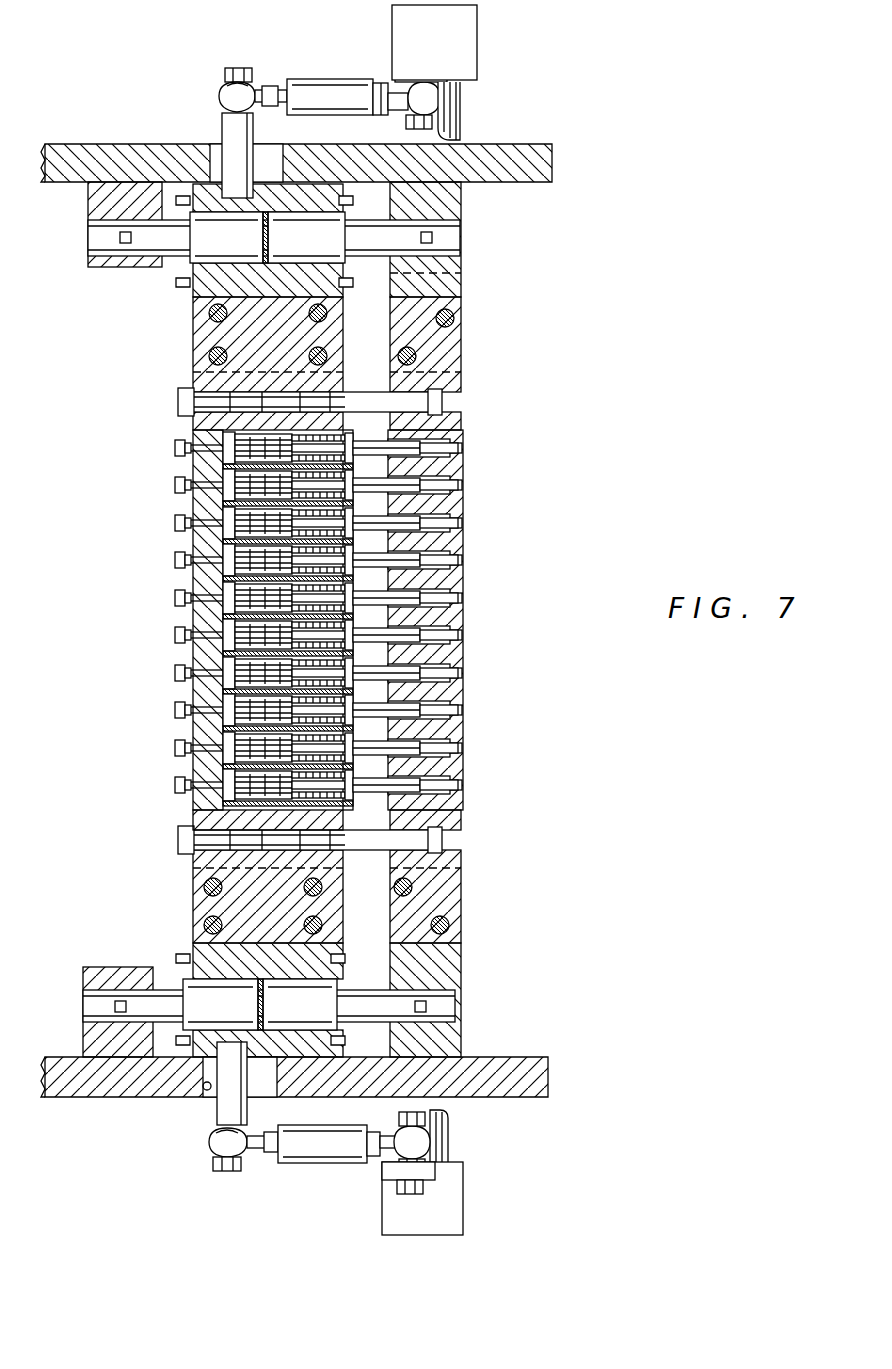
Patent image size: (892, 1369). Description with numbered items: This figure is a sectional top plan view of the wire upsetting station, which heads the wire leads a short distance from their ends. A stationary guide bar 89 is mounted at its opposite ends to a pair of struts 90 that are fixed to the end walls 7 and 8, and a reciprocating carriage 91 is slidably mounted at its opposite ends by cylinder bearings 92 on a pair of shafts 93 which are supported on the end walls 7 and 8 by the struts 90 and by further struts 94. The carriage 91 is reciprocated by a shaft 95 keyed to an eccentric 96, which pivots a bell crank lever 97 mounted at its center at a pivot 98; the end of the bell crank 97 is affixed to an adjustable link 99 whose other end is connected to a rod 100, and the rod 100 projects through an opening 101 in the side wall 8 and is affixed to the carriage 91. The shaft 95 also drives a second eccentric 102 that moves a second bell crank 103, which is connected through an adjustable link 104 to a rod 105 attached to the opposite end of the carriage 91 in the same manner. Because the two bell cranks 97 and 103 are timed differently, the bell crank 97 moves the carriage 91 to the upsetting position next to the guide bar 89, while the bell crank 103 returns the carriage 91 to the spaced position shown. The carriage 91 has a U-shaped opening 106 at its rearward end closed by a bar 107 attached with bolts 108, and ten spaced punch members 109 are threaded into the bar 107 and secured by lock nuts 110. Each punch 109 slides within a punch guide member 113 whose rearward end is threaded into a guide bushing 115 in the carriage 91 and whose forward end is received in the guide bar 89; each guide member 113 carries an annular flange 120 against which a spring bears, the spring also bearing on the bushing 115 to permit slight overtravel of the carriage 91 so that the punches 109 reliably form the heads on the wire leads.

The end wall 7 is at (520, 144).
The end wall 8 is at (508, 1097).
The stationary guide bar 89 is at (453, 893).
The struts 90 is at (455, 210).
The reciprocating carriage 91 is at (193, 905).
The cylinder bearings 92 is at (264, 621).
The shafts 93 is at (150, 254).
The rail bracket 94 is at (88, 212).
The shaft 95 is at (460, 108).
The eccentric 96 is at (463, 1218).
The bell crank lever 97 is at (435, 1175).
The pivot 98 is at (408, 1194).
The adjustable link 99 is at (318, 1165).
The rod 100 is at (210, 1140).
The opening 101 is at (207, 1088).
The second eccentric 102 is at (477, 35).
The bell crank 103 is at (395, 72).
The adjustable link 104 is at (315, 79).
The rod 105 is at (222, 112).
The U-shaped opening 106 is at (193, 812).
The bar 107 is at (193, 690).
The bolts 108 is at (180, 400).
The punch members 109 is at (175, 523).
The lock nuts 110 is at (175, 562).
The punch guide member 113 is at (365, 478).
The guide bushing 115 is at (223, 438).
The annular flange 120 is at (345, 808).